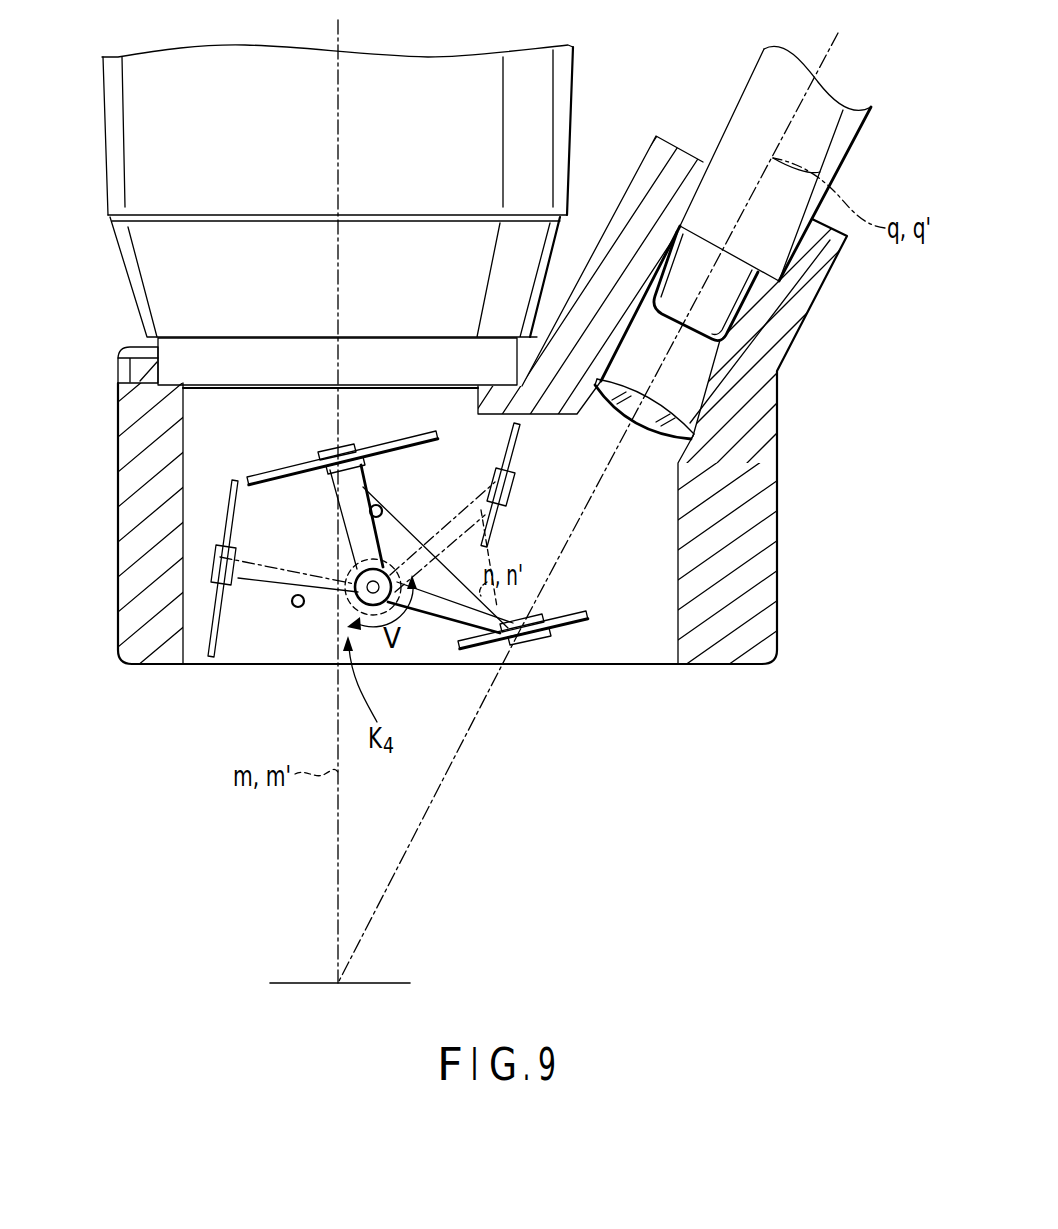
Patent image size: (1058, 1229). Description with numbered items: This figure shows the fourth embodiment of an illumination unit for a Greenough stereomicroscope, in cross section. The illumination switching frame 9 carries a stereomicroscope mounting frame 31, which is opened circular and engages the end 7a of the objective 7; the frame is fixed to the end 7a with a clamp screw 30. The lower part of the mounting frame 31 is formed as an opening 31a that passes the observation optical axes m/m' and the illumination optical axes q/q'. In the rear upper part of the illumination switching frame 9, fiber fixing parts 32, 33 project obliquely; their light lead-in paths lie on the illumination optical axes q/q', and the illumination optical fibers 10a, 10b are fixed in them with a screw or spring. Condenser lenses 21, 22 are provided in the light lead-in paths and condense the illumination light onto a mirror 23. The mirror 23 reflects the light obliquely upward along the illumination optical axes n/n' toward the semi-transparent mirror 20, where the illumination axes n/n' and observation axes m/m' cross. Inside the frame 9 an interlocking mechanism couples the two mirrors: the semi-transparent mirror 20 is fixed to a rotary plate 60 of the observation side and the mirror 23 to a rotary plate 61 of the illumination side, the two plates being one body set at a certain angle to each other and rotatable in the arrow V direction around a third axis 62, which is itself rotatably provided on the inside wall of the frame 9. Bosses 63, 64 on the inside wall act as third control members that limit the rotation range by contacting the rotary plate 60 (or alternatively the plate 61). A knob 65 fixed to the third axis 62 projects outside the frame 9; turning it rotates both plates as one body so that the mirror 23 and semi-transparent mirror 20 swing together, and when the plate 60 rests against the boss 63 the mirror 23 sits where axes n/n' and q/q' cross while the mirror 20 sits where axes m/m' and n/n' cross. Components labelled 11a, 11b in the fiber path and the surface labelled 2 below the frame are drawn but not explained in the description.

The object surface 2 is at (380, 983).
The objective 7 is at (118, 150).
The end of the objective 7a is at (197, 353).
The illumination switching frame 9 is at (133, 622).
The illumination optical fiber 10a is at (813, 163).
The illumination optical fiber 10b is at (858, 136).
The lens holder 11a is at (774, 322).
The lens holder 11b is at (697, 340).
The semi-transparent mirror 20 is at (273, 468).
The condenser lens 21 is at (745, 442).
The condenser lens 22 is at (690, 412).
The mirror 23 is at (562, 633).
The clamp screw 30 is at (130, 370).
The stereomicroscope mounting frame 31 is at (505, 368).
The opening 31a is at (187, 650).
The fiber fixing part 32 is at (842, 206).
The fiber fixing part 33 is at (795, 252).
The rotary plate of the observation side 60 is at (346, 501).
The rotary plate of the illumination side 61 is at (437, 622).
The third axis 62 is at (368, 594).
The boss 63 is at (382, 504).
The boss 64 is at (296, 606).
The knob 65 is at (352, 545).